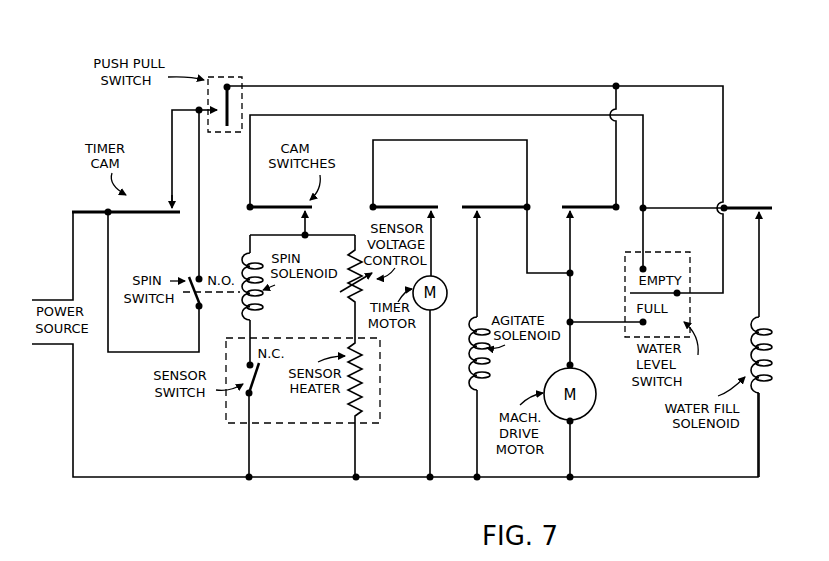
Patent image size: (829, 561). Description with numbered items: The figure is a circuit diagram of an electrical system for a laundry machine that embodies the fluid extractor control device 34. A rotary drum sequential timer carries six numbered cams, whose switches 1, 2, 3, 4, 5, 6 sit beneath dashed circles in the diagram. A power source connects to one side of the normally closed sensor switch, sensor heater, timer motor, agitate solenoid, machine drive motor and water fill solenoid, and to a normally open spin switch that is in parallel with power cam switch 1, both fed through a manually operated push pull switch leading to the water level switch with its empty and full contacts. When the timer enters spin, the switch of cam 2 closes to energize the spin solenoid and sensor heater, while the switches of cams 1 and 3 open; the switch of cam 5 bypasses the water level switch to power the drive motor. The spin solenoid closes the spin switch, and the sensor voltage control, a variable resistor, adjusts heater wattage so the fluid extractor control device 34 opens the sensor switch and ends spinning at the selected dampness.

The power cam switch 1 is at (126, 195).
The timer cam 2 is at (281, 191).
The cam switch 3 is at (405, 191).
The cam switch 4 is at (494, 191).
The cam switch 5 is at (589, 191).
The cam switch 6 is at (748, 191).
The fluid extractor control device 34 is at (226, 423).